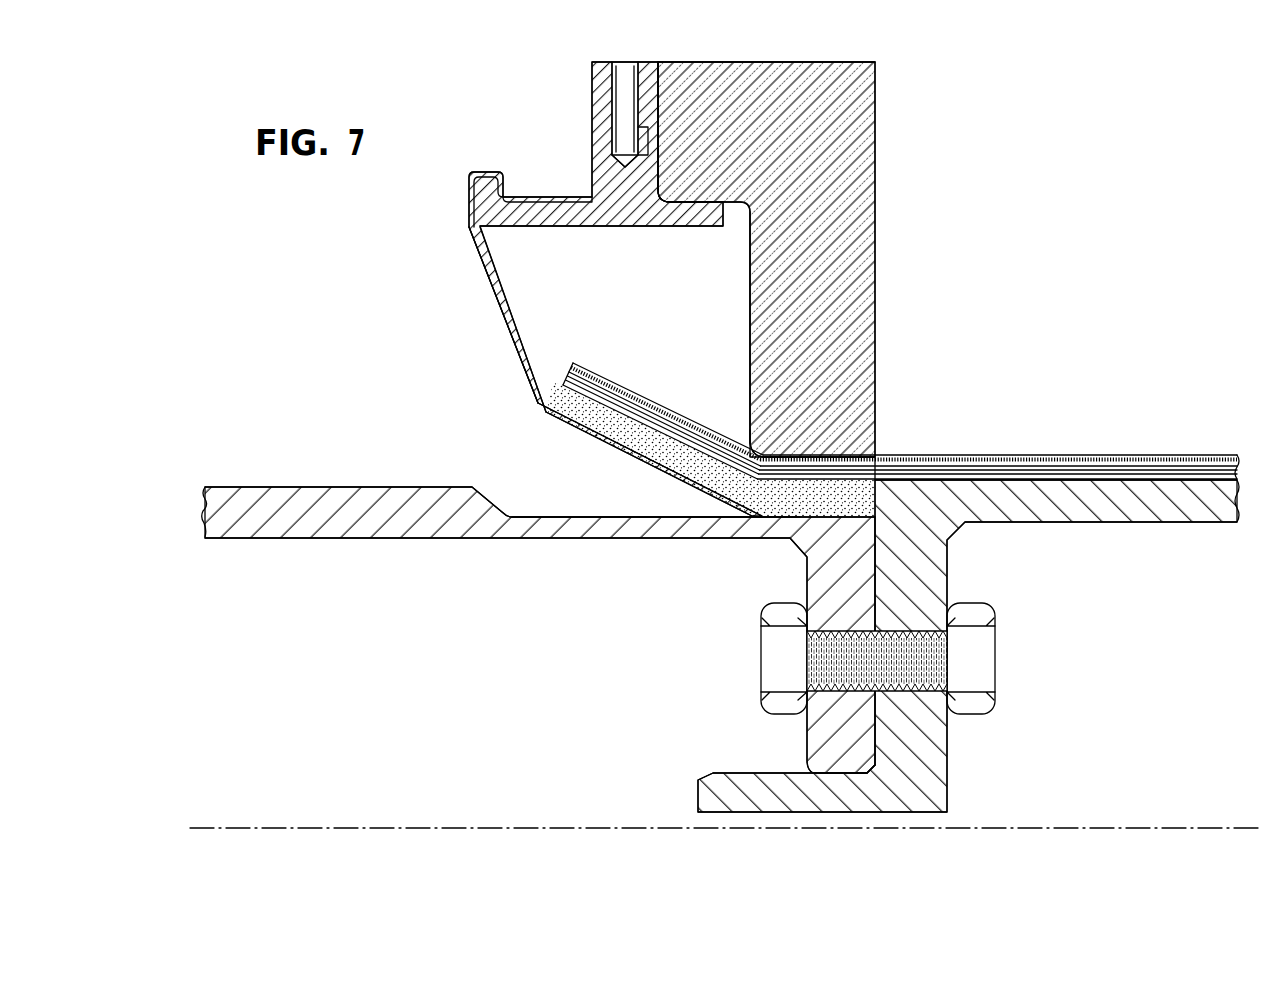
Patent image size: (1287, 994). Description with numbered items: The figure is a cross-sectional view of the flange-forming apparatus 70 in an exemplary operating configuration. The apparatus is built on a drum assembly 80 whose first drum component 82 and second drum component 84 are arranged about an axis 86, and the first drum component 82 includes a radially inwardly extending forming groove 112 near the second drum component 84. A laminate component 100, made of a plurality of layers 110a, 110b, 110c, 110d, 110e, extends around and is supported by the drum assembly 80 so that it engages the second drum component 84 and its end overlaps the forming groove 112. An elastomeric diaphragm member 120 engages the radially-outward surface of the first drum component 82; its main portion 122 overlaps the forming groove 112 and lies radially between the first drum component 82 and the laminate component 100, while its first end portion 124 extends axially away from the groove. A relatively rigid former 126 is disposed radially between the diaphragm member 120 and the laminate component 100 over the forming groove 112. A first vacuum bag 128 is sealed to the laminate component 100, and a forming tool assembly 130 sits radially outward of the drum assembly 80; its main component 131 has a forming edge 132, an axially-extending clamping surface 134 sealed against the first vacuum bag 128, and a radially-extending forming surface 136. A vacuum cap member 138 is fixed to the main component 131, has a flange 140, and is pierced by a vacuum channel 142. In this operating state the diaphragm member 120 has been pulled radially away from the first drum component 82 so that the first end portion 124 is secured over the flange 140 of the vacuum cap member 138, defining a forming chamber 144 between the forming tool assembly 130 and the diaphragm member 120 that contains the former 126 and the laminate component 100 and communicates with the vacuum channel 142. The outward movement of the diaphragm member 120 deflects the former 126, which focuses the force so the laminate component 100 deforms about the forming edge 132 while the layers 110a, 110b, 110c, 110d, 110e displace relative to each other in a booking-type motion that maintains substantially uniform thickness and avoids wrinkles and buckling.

The flange-forming apparatus 70 is at (381, 291).
The drum assembly 80 is at (646, 702).
The first drum component 82 is at (328, 540).
The second drum component 84 is at (1178, 523).
The axis 86 is at (296, 828).
The laminate component 100 is at (630, 370).
The layer 110a is at (566, 372).
The layer 110b is at (569, 374).
The layer 110c is at (572, 376).
The layer 110d is at (575, 378).
The layer 110e is at (580, 368).
The forming groove 112 is at (547, 516).
The diaphragm member 120 is at (502, 313).
The main portion 122 is at (643, 460).
The first end portion 124 is at (470, 233).
The former 126 is at (545, 392).
The first vacuum bag 128 is at (1143, 457).
The forming tool assembly 130 is at (802, 397).
The main component 131 is at (764, 62).
The forming edge 132 is at (745, 447).
The clamping surface 134 is at (808, 455).
The forming surface 136 is at (746, 252).
The vacuum cap member 138 is at (574, 277).
The flange 140 is at (484, 178).
The vacuum channel 142 is at (623, 62).
The forming chamber 144 is at (711, 311).